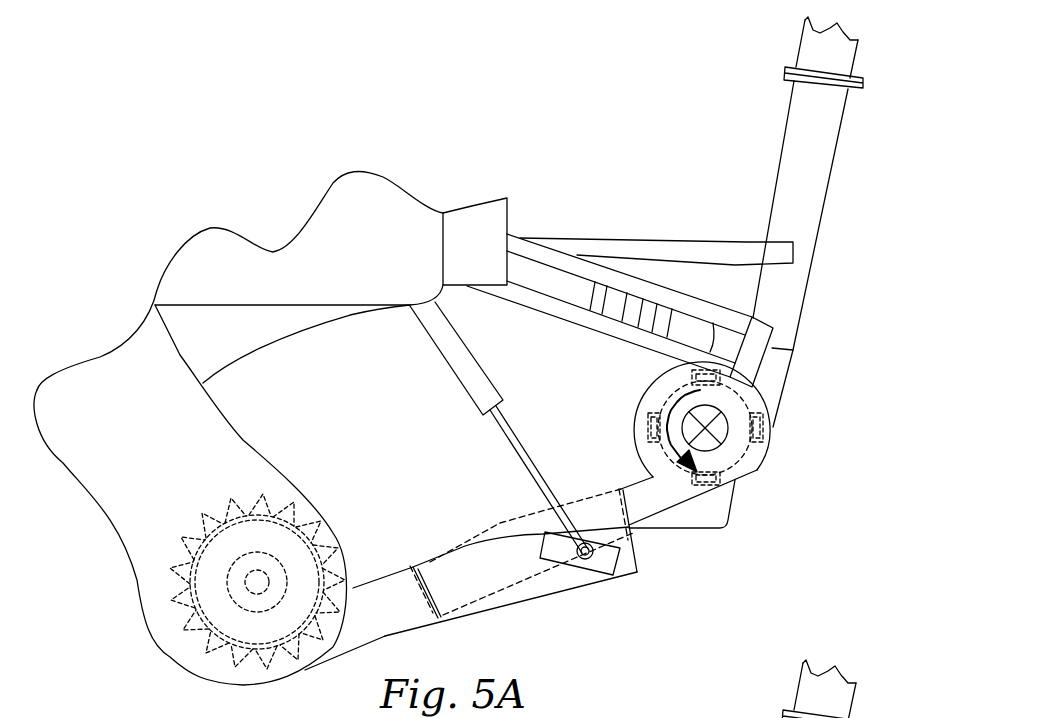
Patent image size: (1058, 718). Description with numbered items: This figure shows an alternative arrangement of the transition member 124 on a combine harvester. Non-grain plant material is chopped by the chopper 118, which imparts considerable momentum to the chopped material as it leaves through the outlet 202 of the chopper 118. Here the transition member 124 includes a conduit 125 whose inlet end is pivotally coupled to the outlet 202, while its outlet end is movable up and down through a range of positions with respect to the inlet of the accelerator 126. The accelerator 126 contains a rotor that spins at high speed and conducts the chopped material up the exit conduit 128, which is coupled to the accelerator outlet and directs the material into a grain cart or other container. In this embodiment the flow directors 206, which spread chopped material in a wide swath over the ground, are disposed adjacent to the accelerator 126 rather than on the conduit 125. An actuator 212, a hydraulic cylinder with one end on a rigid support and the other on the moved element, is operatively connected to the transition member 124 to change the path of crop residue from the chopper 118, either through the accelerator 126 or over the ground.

The chopper 118 is at (282, 532).
The transition member 124 is at (519, 601).
The conduit 125 is at (565, 589).
The accelerator 126 is at (757, 470).
The exit conduit 128 is at (808, 50).
The outlet 202 is at (413, 630).
The flow directors 206 is at (702, 528).
The actuator 212 is at (457, 352).